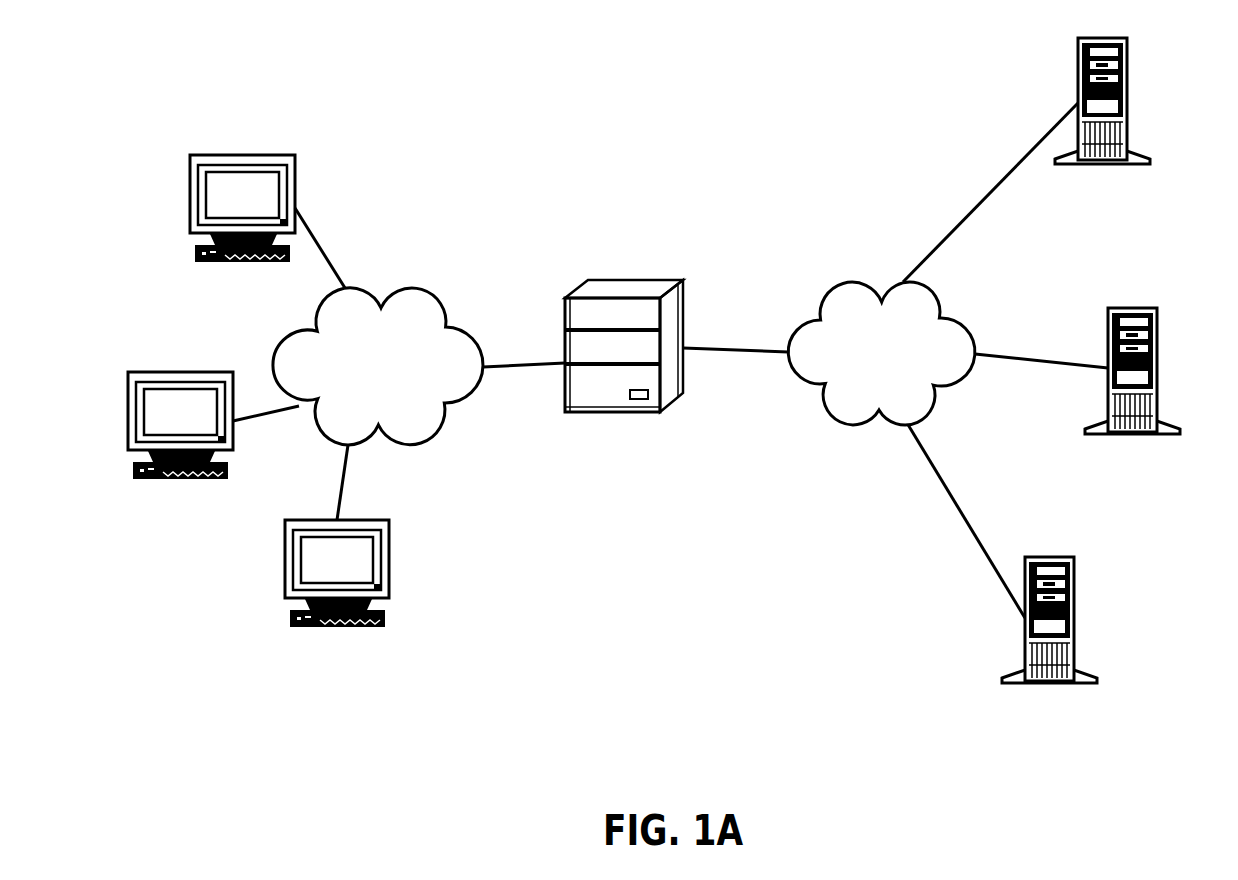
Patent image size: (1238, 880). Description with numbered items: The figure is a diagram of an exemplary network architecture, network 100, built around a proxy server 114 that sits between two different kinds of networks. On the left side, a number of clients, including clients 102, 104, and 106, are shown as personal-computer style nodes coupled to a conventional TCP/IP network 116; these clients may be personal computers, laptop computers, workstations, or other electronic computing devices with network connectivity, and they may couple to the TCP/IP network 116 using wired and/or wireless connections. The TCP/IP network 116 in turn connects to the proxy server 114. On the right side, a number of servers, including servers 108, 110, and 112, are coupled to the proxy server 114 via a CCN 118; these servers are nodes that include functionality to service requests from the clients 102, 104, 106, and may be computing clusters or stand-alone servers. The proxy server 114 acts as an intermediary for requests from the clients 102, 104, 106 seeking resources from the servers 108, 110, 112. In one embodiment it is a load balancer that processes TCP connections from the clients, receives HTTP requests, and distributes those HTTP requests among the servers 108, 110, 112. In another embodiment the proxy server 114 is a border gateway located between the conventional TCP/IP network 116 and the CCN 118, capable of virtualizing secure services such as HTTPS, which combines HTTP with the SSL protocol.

The network 100 is at (687, 712).
The client 102 is at (190, 208).
The client 104 is at (128, 422).
The client 106 is at (285, 572).
The server 108 is at (1128, 103).
The server 110 is at (1158, 370).
The server 112 is at (1073, 620).
The proxy server 114 is at (627, 280).
The TCP/IP network 116 is at (378, 366).
The CCN 118 is at (881, 353).